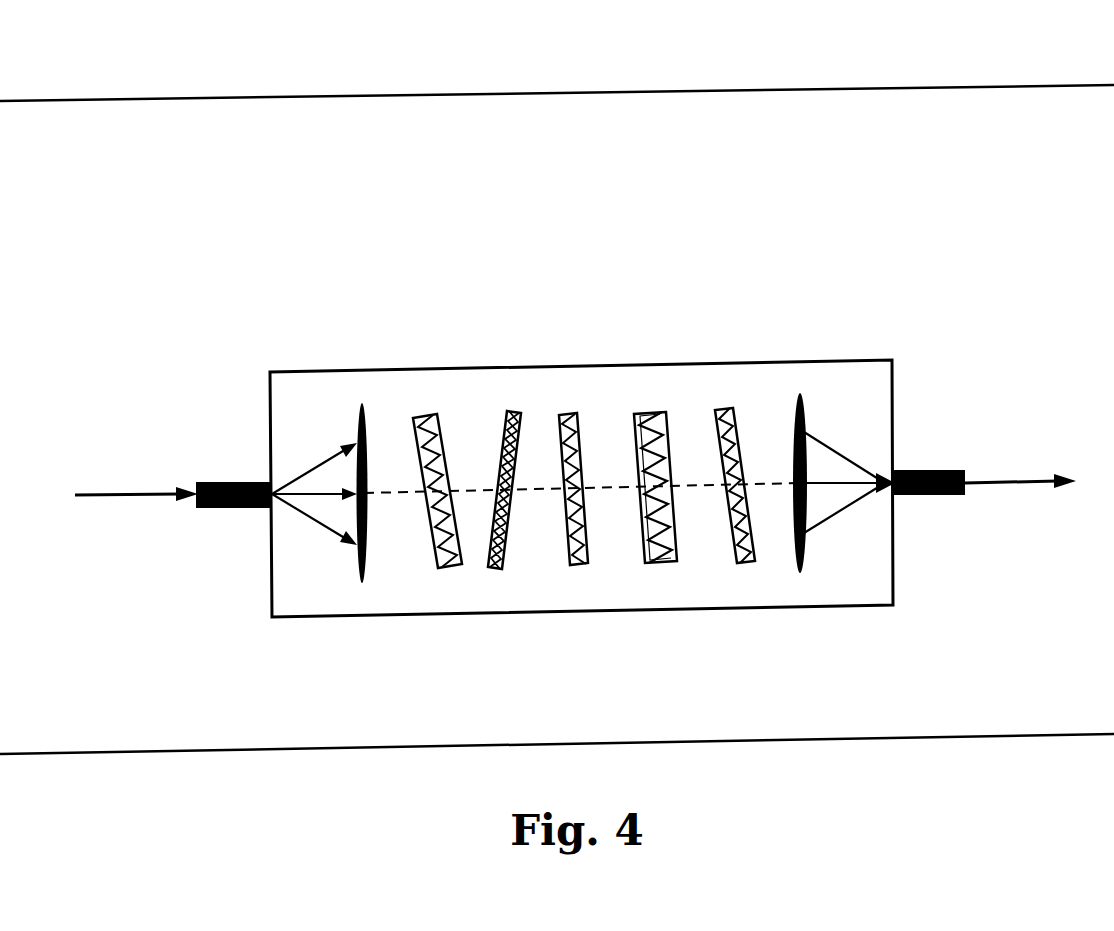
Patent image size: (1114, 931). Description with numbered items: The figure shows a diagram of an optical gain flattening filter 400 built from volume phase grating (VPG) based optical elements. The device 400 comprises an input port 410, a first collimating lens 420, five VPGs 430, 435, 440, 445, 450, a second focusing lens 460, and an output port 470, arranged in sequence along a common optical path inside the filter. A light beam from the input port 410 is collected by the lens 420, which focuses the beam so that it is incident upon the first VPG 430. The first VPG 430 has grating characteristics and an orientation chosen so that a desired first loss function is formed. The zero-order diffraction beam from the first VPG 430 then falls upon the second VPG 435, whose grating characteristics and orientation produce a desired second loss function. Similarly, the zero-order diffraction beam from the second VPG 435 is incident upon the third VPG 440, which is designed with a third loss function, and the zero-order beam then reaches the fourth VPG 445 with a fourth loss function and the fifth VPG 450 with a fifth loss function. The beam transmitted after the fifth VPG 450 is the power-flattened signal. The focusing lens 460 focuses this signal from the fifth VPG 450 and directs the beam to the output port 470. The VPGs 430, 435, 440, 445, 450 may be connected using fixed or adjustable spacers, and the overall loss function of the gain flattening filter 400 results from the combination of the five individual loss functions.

The gain flattening filter 400 is at (538, 178).
The input port 410 is at (243, 482).
The first collimating lens 420 is at (362, 407).
The first VPG 430 is at (425, 415).
The second VPG 435 is at (514, 411).
The third VPG 440 is at (570, 413).
The fourth VPG 445 is at (649, 412).
The fifth VPG 450 is at (725, 408).
The second focusing lens 460 is at (799, 395).
The output port 470 is at (925, 470).